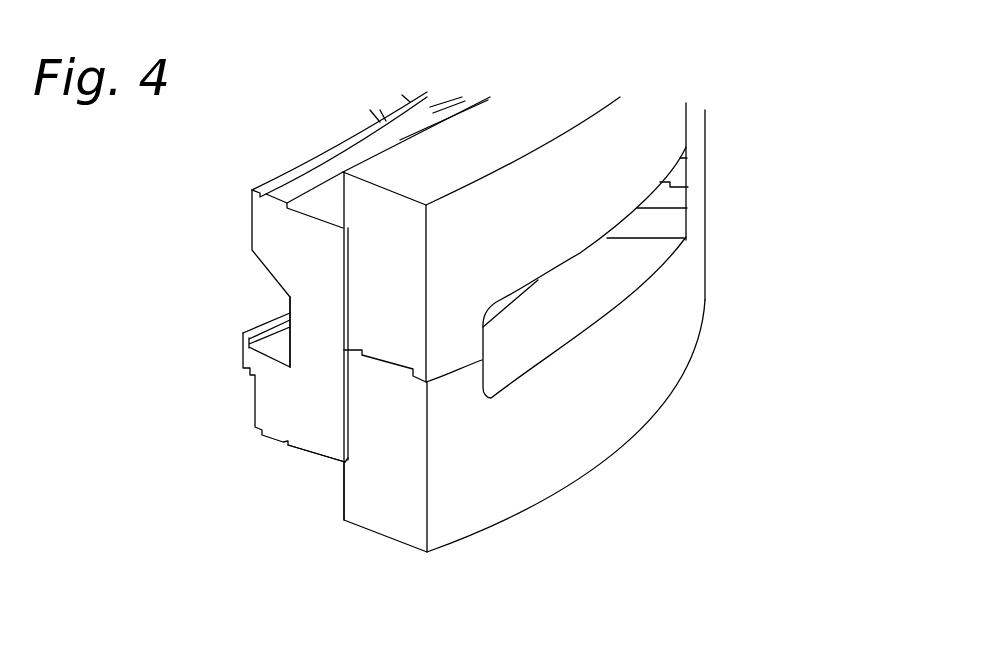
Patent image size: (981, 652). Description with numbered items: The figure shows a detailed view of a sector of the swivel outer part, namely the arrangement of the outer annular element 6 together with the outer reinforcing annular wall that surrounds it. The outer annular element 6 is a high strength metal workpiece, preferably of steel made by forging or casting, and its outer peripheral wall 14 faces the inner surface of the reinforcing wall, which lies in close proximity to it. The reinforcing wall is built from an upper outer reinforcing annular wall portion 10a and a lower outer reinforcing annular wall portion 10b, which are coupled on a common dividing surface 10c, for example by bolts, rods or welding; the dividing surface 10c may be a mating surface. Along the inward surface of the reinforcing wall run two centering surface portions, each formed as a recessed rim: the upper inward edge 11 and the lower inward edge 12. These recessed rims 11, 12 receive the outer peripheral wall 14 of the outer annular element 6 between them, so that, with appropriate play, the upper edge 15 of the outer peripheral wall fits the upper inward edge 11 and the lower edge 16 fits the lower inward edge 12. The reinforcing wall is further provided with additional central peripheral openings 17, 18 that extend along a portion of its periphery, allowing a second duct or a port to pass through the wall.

The outer annular element 6 is at (268, 397).
The upper edge 15 is at (390, 218).
The upper inward edge 11 is at (390, 218).
The upper outer reinforcing annular wall portion 10a is at (590, 173).
The lower outer reinforcing annular wall portion 10b is at (573, 428).
The dividing surface 10c is at (450, 373).
The central peripheral opening 17 is at (656, 272).
The central peripheral opening 18 is at (638, 270).
The lower inward edge 12 is at (328, 415).
The outer peripheral wall 14 is at (350, 418).
The lower edge 16 is at (338, 461).